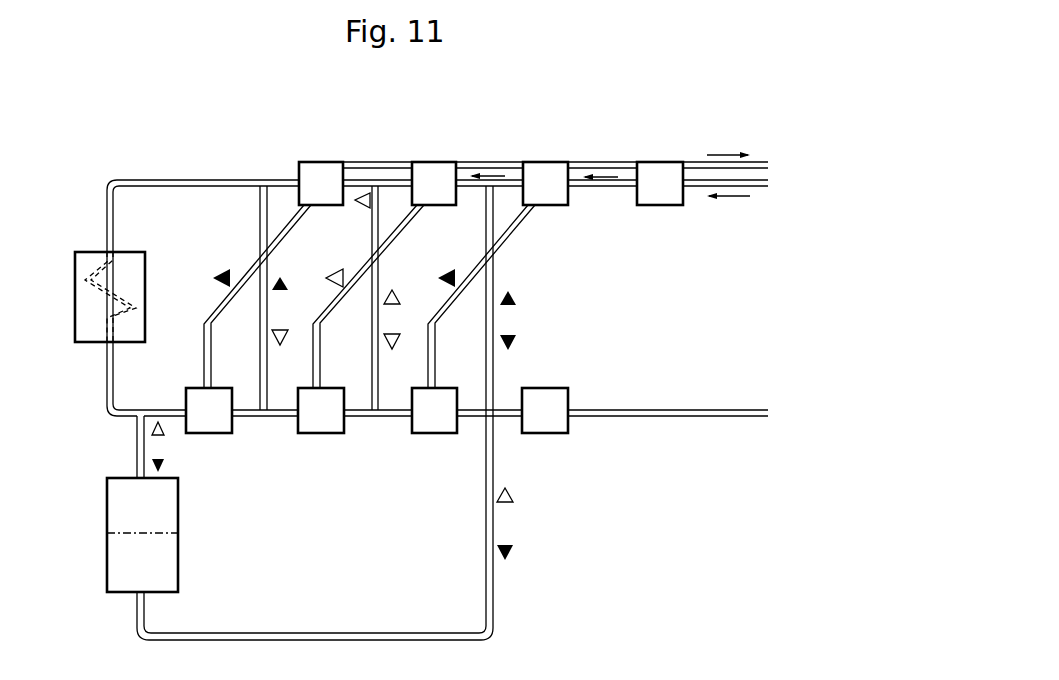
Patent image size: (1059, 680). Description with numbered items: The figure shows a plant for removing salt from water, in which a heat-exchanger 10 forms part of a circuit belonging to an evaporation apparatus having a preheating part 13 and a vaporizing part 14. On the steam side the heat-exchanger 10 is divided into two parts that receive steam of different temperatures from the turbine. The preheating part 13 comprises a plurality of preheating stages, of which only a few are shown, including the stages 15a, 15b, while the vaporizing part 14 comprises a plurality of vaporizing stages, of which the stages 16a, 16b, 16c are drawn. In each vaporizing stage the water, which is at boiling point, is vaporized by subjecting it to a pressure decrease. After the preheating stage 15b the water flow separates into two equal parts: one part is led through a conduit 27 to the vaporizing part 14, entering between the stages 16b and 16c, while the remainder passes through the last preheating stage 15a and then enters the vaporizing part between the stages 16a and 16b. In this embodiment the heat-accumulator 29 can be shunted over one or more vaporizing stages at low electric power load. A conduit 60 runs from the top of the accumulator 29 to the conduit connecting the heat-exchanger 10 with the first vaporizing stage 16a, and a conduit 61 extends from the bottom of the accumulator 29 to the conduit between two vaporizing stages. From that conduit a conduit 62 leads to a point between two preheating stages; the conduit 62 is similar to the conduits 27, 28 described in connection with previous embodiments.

The heat-exchanger 10 is at (75, 288).
The preheating part 13 is at (578, 139).
The vaporizing part 14 is at (391, 486).
The preheating stage 15a is at (318, 161).
The preheating stage 15b is at (438, 161).
The vaporizing stage 16a is at (217, 433).
The vaporizing stage 16b is at (327, 433).
The vaporizing stage 16c is at (445, 433).
The conduit 27 is at (372, 233).
The conduit 28 is at (260, 218).
The accumulator 29 is at (107, 519).
The conduit 60 is at (137, 444).
The conduit 61 is at (493, 525).
The conduit 62 is at (493, 316).